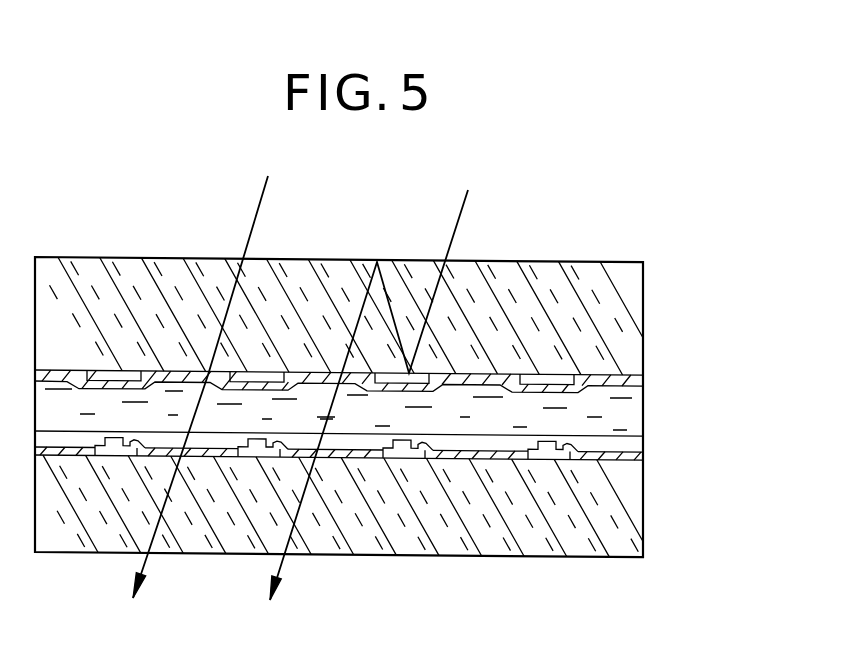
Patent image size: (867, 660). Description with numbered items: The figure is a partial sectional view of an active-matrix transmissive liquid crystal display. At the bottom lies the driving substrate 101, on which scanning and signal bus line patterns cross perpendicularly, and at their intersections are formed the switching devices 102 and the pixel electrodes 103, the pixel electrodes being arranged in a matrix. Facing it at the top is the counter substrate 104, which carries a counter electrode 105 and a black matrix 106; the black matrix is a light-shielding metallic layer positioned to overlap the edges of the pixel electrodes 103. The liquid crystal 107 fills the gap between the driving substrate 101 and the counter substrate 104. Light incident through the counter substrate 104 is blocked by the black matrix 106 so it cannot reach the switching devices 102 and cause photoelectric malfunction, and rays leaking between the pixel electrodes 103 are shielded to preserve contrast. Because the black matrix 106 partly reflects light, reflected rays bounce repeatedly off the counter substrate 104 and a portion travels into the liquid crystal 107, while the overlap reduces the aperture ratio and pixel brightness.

The driving substrate 101 is at (618, 507).
The switching devices 102 is at (407, 459).
The pixel electrodes 103 is at (483, 459).
The counter substrate 104 is at (622, 307).
The counter electrode 105 is at (628, 384).
The black matrix 106 is at (560, 376).
The liquid crystal 107 is at (628, 422).